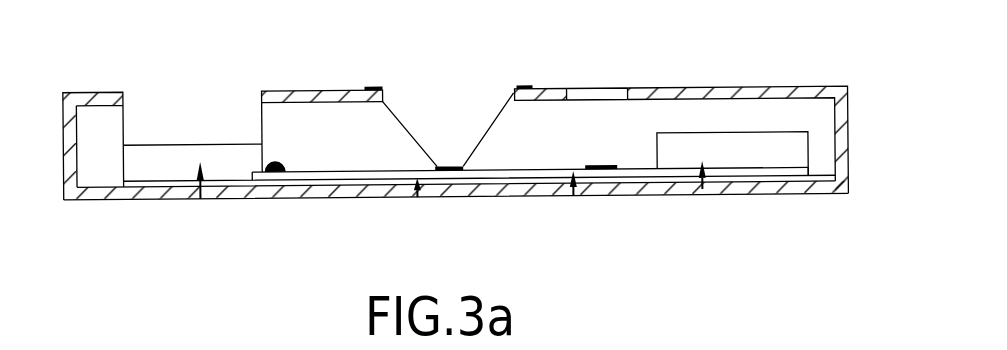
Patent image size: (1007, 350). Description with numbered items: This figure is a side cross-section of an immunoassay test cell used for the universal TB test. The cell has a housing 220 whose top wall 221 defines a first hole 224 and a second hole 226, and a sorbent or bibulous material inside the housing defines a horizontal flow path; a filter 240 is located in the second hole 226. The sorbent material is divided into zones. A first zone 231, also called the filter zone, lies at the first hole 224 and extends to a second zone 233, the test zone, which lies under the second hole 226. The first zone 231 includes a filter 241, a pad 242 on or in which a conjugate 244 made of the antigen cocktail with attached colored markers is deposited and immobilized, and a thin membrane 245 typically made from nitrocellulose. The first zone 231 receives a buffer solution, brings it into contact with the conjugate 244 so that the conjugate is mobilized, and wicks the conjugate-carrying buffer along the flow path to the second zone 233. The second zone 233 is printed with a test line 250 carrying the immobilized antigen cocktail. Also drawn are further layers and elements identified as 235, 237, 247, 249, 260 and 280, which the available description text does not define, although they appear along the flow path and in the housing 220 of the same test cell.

The housing 220 is at (770, 88).
The top wall 221 is at (328, 89).
The first hole 224 is at (262, 89).
The second hole 226 is at (513, 90).
The first zone 231 is at (199, 199).
The second zone 233 is at (420, 199).
The light beam 235 is at (568, 198).
The light beam 237 is at (700, 194).
The filter 240 is at (483, 126).
The filter 241 is at (152, 168).
The pad 242 is at (264, 178).
The conjugate 244 is at (284, 174).
The thin membrane 245 is at (332, 176).
The chip 247 is at (722, 160).
The insulating layer 249 is at (373, 179).
The test line 250 is at (467, 172).
The bond pad 260 is at (603, 172).
The window 280 is at (599, 89).